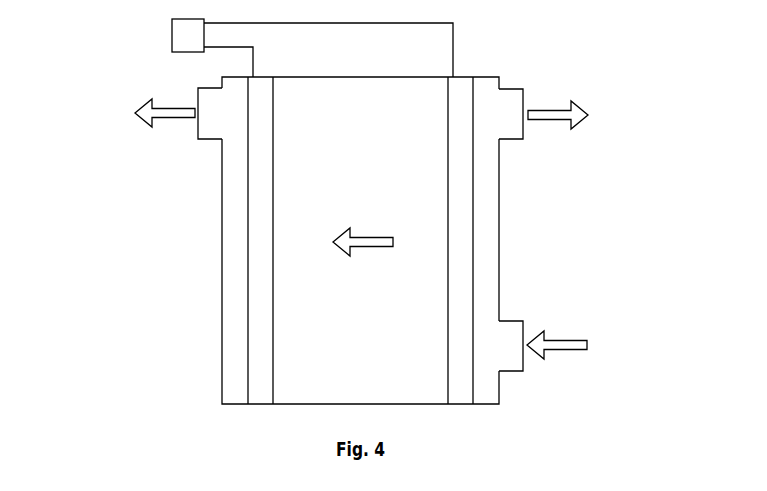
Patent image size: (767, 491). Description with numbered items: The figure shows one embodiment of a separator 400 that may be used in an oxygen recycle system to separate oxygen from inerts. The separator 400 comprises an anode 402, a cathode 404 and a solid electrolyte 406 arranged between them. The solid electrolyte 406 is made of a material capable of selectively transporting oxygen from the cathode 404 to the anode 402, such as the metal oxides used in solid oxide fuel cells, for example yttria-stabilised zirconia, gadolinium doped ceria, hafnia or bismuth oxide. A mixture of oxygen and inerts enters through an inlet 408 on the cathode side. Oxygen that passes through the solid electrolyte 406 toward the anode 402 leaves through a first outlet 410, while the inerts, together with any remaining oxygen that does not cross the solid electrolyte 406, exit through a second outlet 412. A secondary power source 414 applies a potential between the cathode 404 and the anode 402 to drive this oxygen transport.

The separator 400 is at (515, 46).
The anode 402 is at (258, 75).
The cathode 404 is at (460, 76).
The solid electrolyte 406 is at (360, 75).
The inlet 408 is at (500, 320).
The first outlet 410 is at (220, 87).
The second outlet 412 is at (500, 89).
The secondary power source 414 is at (172, 43).